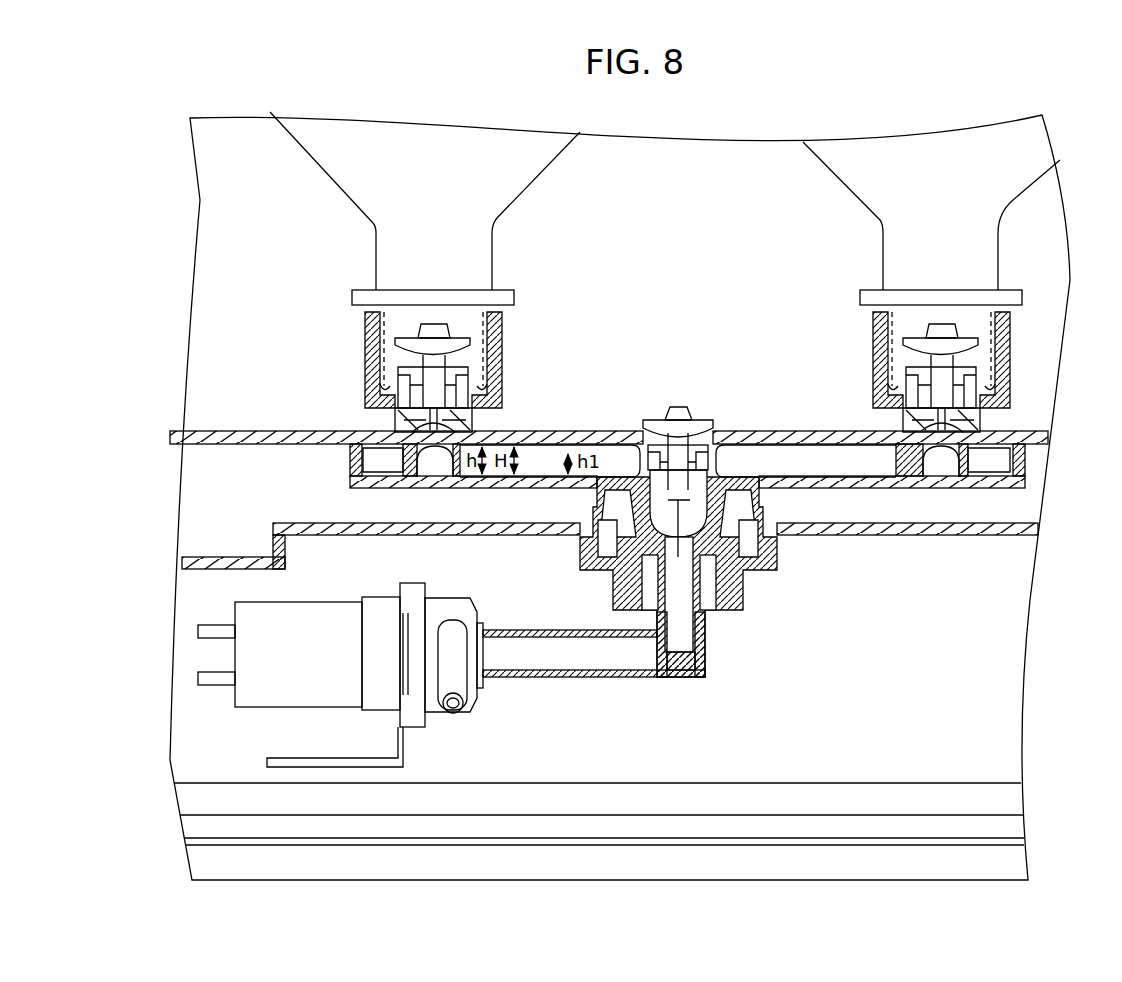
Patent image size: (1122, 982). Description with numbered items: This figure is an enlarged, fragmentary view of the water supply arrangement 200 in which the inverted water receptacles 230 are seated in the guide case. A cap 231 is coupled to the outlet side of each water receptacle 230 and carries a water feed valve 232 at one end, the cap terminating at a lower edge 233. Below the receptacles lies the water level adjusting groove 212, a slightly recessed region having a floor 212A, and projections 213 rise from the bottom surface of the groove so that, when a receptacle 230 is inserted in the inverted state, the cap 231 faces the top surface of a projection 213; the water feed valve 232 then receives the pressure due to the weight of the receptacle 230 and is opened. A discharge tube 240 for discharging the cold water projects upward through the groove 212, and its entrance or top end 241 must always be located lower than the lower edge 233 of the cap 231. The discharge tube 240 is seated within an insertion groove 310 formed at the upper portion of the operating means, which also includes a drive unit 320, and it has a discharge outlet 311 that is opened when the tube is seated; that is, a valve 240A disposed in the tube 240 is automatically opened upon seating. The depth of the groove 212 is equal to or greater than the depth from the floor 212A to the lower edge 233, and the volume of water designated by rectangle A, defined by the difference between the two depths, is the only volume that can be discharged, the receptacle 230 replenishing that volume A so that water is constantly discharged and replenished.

The cooling/processing apparatus body 200 is at (316, 218).
The water receptacle 230 is at (523, 162).
The cap 231 is at (494, 388).
The water feed valve 232 is at (456, 345).
The lower edge of the cap 233 is at (396, 426).
The water level adjusting groove 212 is at (372, 457).
The floor of the groove 212A is at (857, 482).
The projection 213 is at (412, 470).
The discharge tube 240 is at (722, 488).
The valve 240A is at (719, 411).
The top end of the discharge tube 241 is at (705, 434).
The insertion groove 310 is at (740, 522).
The discharge outlet 311 is at (678, 626).
The motor 320 is at (258, 680).
The rectangle A (water volume) A is at (846, 432).